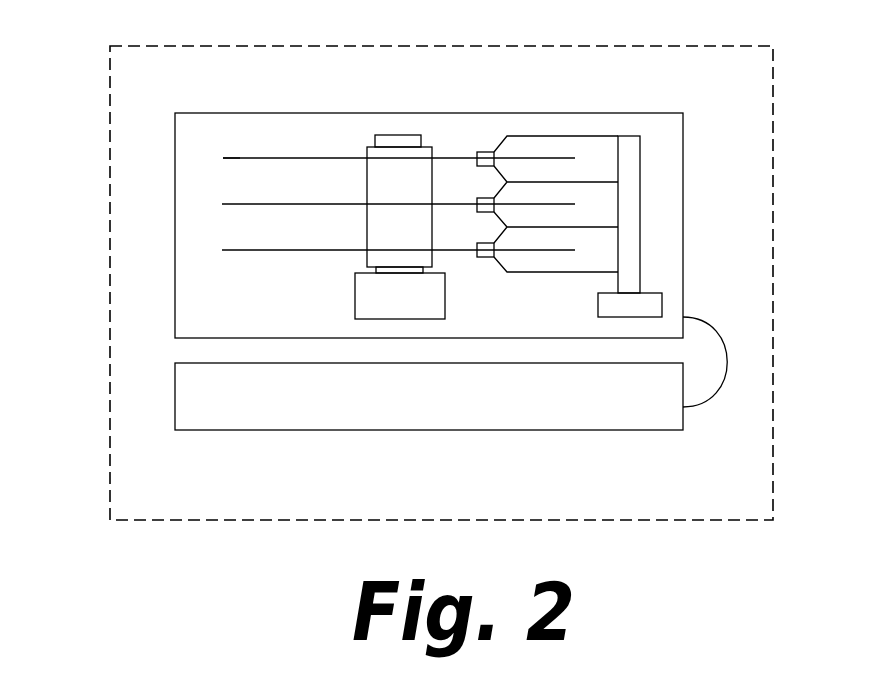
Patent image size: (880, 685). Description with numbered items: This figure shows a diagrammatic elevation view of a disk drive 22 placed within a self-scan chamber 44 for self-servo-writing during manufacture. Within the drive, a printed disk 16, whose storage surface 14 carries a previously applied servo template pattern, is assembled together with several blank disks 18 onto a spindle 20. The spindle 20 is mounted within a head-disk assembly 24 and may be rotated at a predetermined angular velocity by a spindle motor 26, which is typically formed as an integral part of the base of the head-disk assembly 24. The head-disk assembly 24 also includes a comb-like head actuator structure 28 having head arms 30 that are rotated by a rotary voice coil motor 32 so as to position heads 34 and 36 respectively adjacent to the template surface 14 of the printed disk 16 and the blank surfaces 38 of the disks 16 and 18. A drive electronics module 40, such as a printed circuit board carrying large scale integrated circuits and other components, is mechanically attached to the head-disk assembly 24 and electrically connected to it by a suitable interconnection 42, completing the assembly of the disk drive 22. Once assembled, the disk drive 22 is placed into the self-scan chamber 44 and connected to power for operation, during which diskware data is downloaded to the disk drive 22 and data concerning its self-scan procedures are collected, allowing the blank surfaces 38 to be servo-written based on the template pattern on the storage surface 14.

The lead wire 14 is at (305, 158).
The wire end 16 is at (223, 156).
The input leads 18 is at (222, 204).
The preamplifier chip 20 is at (390, 135).
The device under test 22 is at (713, 223).
The housing 24 is at (175, 170).
The controller 26 is at (362, 308).
The support bar 28 is at (630, 152).
The transducer arms 30 is at (595, 272).
The base 32 is at (652, 300).
The sensors 34 is at (481, 152).
The sensor inputs 36 is at (477, 164).
The signal lines 38 is at (327, 158).
The drive electronics 40 is at (608, 415).
The connection 42 is at (714, 392).
The self-scan system 44 is at (574, 506).